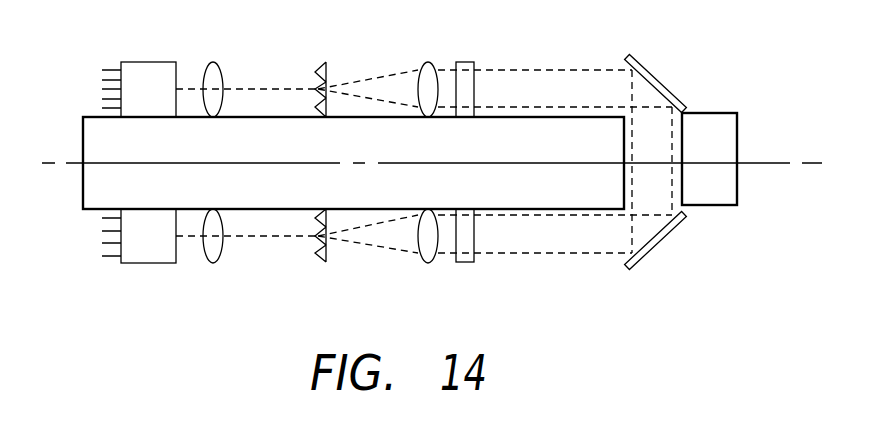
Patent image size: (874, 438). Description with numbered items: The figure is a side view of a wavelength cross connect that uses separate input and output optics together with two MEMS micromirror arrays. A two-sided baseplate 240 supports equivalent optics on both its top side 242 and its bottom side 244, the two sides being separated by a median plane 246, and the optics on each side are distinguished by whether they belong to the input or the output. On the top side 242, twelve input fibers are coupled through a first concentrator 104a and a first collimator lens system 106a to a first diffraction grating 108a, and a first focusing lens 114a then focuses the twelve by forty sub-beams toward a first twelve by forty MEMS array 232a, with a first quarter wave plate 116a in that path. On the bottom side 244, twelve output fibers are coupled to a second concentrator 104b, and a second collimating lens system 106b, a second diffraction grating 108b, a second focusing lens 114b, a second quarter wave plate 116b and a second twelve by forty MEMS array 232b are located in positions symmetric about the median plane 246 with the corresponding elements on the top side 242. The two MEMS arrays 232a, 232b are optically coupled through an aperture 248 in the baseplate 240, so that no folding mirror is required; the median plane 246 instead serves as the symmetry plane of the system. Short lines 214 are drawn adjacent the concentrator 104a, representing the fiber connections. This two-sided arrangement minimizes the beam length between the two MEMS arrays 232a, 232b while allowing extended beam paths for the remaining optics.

The first concentrator 104a is at (138, 70).
The second concentrator 104b is at (138, 255).
The first collimator lens system 106a is at (213, 68).
The second collimating lens system 106b is at (213, 258).
The first diffraction grating 108a is at (315, 72).
The second diffraction grating 108b is at (315, 253).
The first focusing lens 114a is at (420, 70).
The second focusing lens 114b is at (425, 253).
The first quarter wave plate 116a is at (467, 80).
The second quarter wave plate 116b is at (468, 245).
The electrodes 214 is at (113, 69).
The first MEMS array 232a is at (643, 72).
The second MEMS array 232b is at (647, 248).
The two-sided baseplate 240 is at (101, 135).
The top side 242 is at (95, 112).
The bottom side 244 is at (92, 210).
The median plane 246 is at (770, 161).
The aperture 248 is at (628, 133).